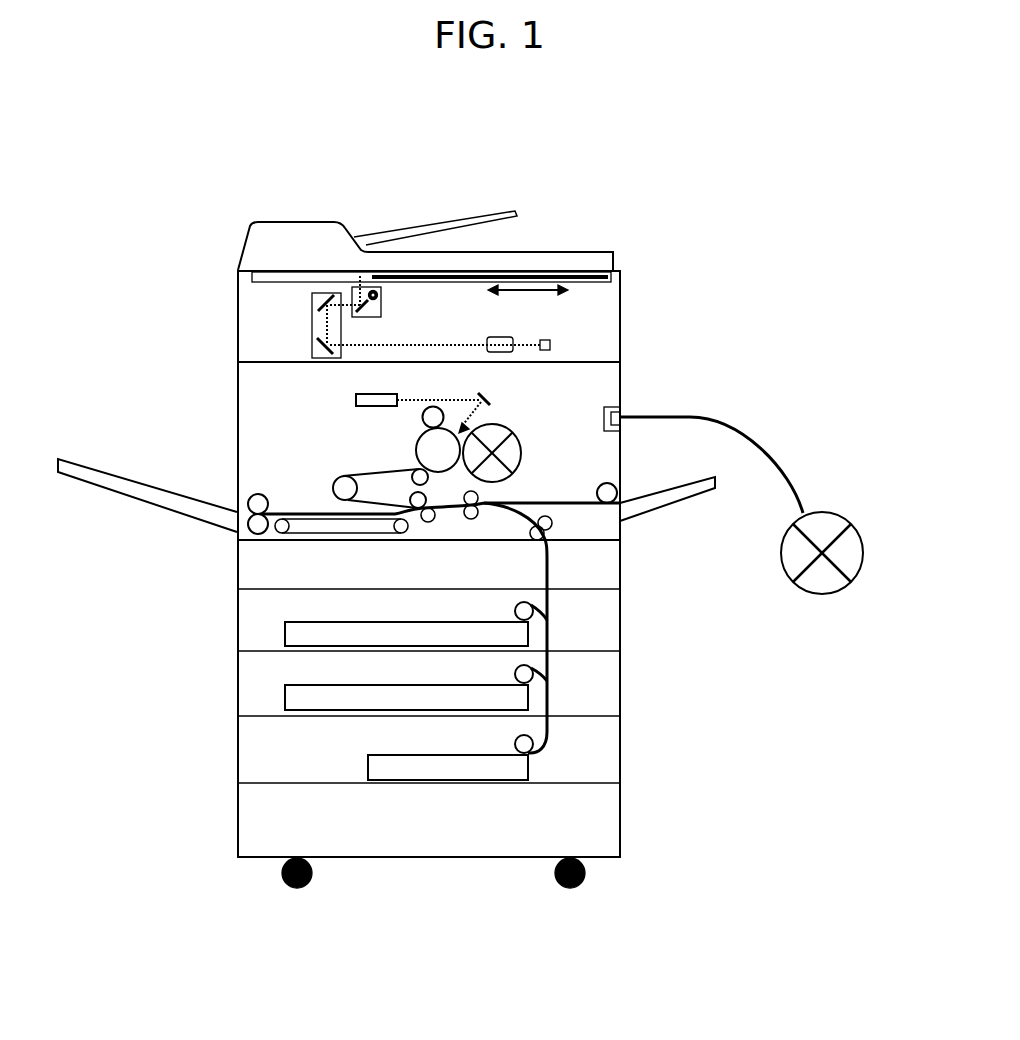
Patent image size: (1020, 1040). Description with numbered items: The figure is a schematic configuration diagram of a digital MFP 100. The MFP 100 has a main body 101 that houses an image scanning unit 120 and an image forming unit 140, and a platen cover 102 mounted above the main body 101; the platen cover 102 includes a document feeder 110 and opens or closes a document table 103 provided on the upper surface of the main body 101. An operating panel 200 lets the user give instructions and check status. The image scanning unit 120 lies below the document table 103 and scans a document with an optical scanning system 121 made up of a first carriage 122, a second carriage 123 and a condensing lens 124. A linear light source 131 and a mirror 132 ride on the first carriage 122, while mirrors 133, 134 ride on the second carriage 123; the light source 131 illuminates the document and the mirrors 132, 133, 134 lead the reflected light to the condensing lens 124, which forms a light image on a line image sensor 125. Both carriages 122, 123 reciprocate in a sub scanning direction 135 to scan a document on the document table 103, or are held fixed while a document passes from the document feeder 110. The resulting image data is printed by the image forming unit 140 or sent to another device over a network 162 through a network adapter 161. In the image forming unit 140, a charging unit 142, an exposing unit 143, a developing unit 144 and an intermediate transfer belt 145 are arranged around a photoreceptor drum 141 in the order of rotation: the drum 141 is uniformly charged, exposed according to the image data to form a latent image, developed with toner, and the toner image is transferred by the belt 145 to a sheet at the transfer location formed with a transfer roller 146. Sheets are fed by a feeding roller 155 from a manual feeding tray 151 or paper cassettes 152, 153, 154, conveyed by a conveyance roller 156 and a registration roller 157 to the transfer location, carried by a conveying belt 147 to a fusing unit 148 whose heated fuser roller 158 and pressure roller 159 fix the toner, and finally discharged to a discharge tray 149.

The MFP 100 is at (610, 158).
The main body 101 is at (222, 370).
The platen cover 102 is at (222, 223).
The document table 103 is at (535, 268).
The document feeder 110 is at (291, 222).
The image scanning unit 120 is at (621, 333).
The optical scanning system 121 is at (605, 302).
The first carriage 122 is at (368, 318).
The second carriage 123 is at (312, 322).
The condensing lens 124 is at (512, 335).
The line image sensor 125 is at (552, 345).
The linear light source 131 is at (379, 296).
The mirror 132 is at (382, 316).
The mirror 133 is at (313, 301).
The mirror 134 is at (320, 353).
The sub scanning direction 135 is at (528, 299).
The image forming unit 140 is at (621, 367).
The photoreceptor drum 141 is at (416, 448).
The charging unit 142 is at (423, 415).
The exposing unit 143 is at (356, 400).
The developing unit 144 is at (515, 437).
The intermediate transfer belt 145 is at (343, 476).
The transfer roller 146 is at (430, 523).
The conveying belt 147 is at (292, 517).
The fusing unit 148 is at (180, 490).
The discharge tray 149 is at (81, 463).
The manual feeding tray 151 is at (663, 503).
The paper cassette 152 is at (285, 630).
The paper cassette 153 is at (285, 693).
The paper cassette 154 is at (368, 765).
The feeding roller 155 is at (613, 488).
The conveyance roller 156 is at (552, 523).
The registration roller 157 is at (474, 520).
The fuser roller 158 is at (250, 496).
The pressure roller 159 is at (250, 520).
The network adapter 161 is at (621, 411).
The network 162 is at (840, 518).
The operating panel 200 is at (614, 262).